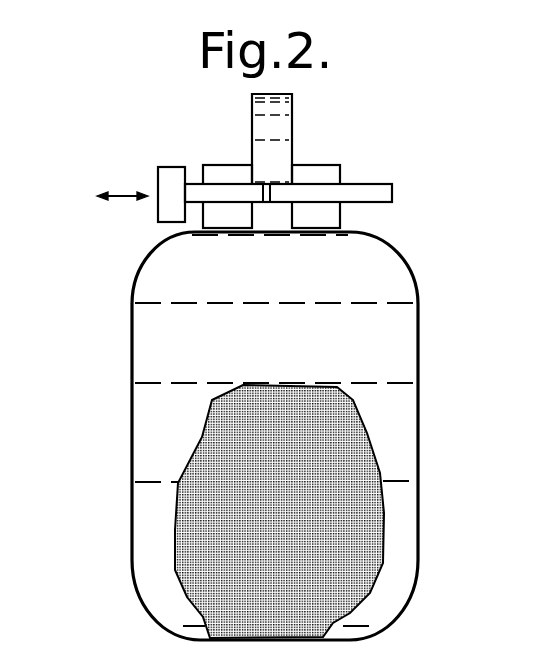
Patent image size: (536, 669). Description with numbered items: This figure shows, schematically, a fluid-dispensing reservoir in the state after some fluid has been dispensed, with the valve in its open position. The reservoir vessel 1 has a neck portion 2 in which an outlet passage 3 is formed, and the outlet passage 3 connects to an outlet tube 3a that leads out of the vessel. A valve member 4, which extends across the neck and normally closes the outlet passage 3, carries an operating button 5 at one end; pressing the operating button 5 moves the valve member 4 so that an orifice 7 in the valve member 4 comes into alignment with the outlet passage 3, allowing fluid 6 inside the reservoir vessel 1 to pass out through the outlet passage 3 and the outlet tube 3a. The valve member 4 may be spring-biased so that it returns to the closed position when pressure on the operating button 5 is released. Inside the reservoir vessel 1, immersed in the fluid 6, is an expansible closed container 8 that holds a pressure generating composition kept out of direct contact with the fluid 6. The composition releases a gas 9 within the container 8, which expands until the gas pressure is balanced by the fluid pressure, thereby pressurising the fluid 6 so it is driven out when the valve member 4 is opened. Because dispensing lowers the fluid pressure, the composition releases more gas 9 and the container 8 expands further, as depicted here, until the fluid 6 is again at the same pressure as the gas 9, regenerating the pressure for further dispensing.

The reservoir vessel 1 is at (418, 337).
The neck portion 2 is at (340, 215).
The outlet passage 3 is at (288, 164).
The outlet tube 3a is at (320, 118).
The valve member 4 is at (375, 184).
The operating button 5 is at (170, 167).
The fluid 6 is at (252, 110).
The orifice 7 is at (262, 193).
The expansible closed container 8 is at (385, 503).
The gas 9 is at (352, 443).